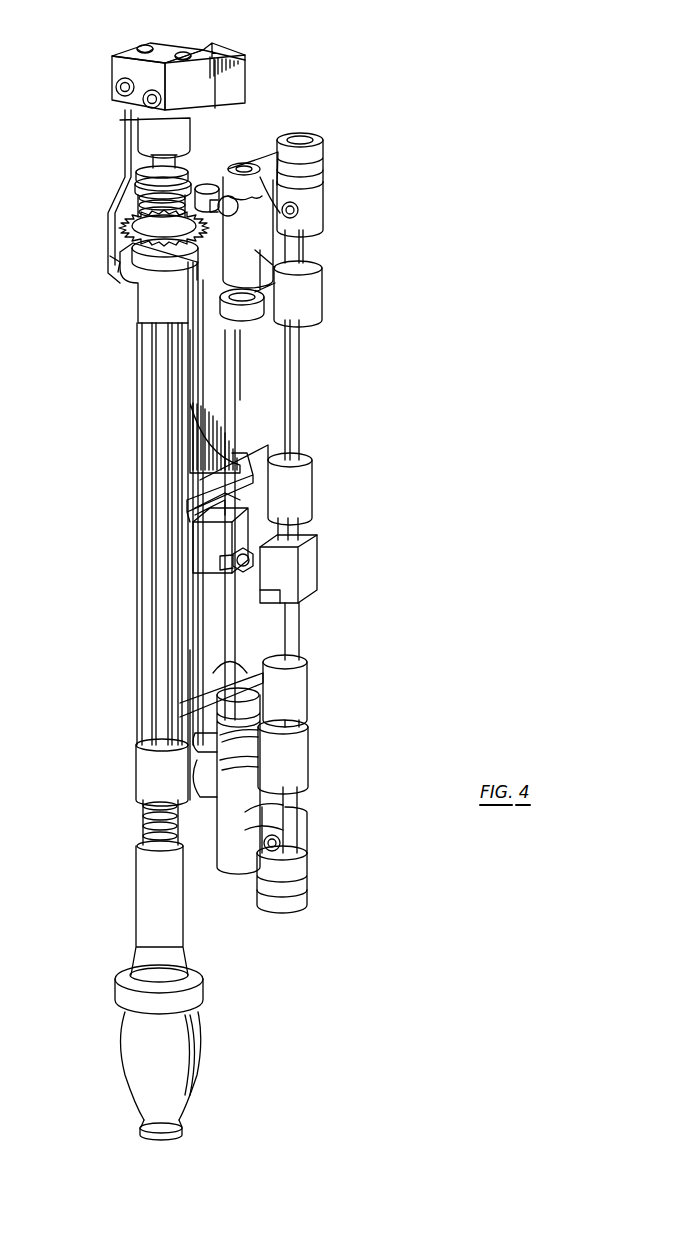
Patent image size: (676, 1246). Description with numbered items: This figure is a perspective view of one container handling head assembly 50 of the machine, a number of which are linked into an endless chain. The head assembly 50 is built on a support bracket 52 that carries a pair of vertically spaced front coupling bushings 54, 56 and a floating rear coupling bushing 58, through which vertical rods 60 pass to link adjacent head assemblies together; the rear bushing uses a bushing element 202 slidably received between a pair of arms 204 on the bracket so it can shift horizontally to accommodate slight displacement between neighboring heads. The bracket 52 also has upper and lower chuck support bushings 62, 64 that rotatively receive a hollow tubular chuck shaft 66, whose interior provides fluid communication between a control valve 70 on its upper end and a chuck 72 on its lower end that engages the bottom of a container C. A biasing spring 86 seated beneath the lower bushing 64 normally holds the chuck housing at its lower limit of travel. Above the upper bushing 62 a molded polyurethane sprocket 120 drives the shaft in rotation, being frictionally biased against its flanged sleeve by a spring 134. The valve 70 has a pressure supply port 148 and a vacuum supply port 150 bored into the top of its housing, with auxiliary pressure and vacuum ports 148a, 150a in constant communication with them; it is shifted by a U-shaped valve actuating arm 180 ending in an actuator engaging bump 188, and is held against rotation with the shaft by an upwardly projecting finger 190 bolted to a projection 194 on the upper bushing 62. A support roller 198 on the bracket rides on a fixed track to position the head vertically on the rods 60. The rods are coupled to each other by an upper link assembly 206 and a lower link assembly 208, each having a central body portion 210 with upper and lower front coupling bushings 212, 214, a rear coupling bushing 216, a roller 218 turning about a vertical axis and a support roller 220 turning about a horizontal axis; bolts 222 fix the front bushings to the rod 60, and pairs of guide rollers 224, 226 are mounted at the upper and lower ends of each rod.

The head assembly 50 is at (127, 399).
The support bracket 52 is at (210, 447).
The front coupling bushing 54 is at (310, 488).
The front coupling bushing 56 is at (303, 692).
The rear coupling bushing 58 is at (200, 575).
The vertical rod 60 is at (300, 373).
The upper chuck support bushing 62 is at (143, 304).
The lower chuck support bushing 64 is at (145, 773).
The hollow tubular chuck shaft 66 is at (158, 628).
The control valve 70 is at (98, 62).
The chuck 72 is at (127, 907).
The biasing spring 86 is at (148, 834).
The sprocket 120 is at (128, 224).
The spring 134 is at (140, 203).
The pressure supply port 148 is at (142, 46).
The vacuum supply port 150 is at (184, 51).
The auxiliary pressure port 148a is at (115, 88).
The auxiliary vacuum port 150a is at (142, 100).
The valve actuating arm 180 is at (243, 90).
The actuator engaging bump 188 is at (224, 50).
The finger 190 is at (124, 138).
The projection 194 is at (122, 265).
The support roller 198 is at (308, 528).
The bushing element 202 is at (313, 573).
The arms 204 is at (200, 556).
The upper link assembly 206 is at (255, 244).
The lower link assembly 208 is at (222, 808).
The central body portion 210 is at (222, 283).
The upper front coupling bushing 212 is at (322, 205).
The lower front coupling bushing 214 is at (320, 289).
The rear coupling bushing 216 is at (209, 184).
The roller 218 is at (240, 316).
The support roller 220 is at (262, 163).
The bolt 222 is at (298, 216).
The guide rollers 224 is at (318, 147).
The guide rollers 226 is at (321, 172).
The container C is at (185, 1045).